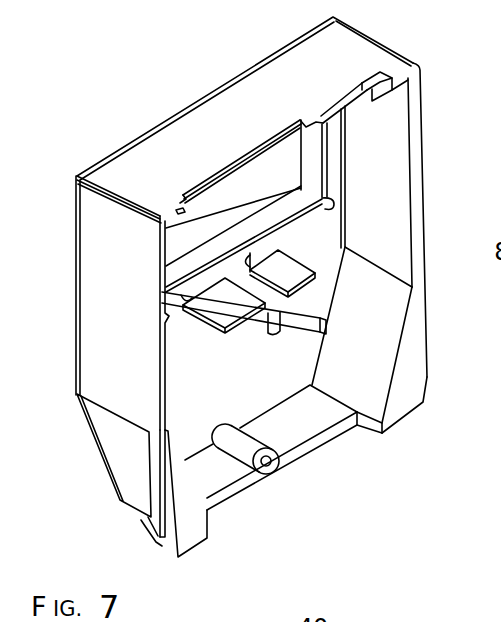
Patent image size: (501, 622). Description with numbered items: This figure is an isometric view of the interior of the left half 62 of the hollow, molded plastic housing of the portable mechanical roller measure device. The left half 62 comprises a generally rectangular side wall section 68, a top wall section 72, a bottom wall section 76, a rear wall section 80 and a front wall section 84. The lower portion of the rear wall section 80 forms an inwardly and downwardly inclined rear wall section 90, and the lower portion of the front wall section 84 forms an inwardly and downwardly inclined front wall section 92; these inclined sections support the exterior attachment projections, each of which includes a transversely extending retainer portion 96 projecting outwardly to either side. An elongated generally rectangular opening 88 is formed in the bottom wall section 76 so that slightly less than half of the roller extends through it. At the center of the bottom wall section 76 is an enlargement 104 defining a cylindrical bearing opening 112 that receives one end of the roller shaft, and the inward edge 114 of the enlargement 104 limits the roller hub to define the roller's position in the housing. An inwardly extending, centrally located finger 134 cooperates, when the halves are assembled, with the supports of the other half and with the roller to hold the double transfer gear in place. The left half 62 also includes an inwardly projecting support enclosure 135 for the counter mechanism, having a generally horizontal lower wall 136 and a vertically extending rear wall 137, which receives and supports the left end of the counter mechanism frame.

The left half 62 is at (201, 68).
The top wall section 72 is at (152, 142).
The rear wall section 80 is at (115, 307).
The front wall section 84 is at (397, 185).
The side wall section 68 is at (180, 387).
The inclined rear wall section 90 is at (120, 437).
The retainer portion 96 is at (160, 543).
The inclined front wall section 92 is at (385, 322).
The opening 88 is at (352, 440).
The lower wall 136 is at (252, 223).
The rear wall 137 is at (312, 153).
The support enclosure 135 is at (296, 225).
The finger 134 is at (300, 318).
The bottom wall section 76 is at (220, 480).
The inward edge 114 is at (309, 447).
The enlargement 104 is at (252, 455).
The bearing opening 112 is at (280, 462).